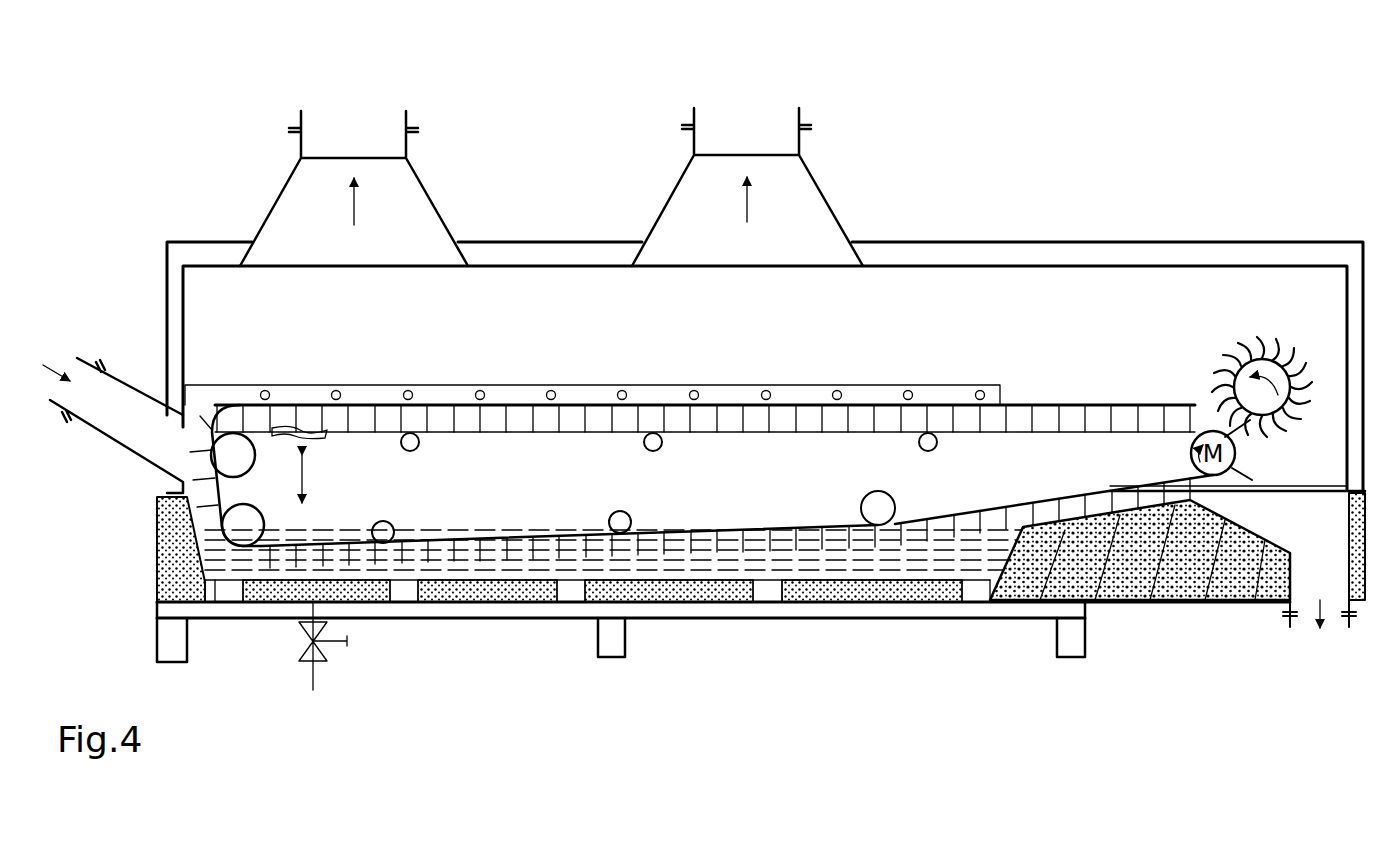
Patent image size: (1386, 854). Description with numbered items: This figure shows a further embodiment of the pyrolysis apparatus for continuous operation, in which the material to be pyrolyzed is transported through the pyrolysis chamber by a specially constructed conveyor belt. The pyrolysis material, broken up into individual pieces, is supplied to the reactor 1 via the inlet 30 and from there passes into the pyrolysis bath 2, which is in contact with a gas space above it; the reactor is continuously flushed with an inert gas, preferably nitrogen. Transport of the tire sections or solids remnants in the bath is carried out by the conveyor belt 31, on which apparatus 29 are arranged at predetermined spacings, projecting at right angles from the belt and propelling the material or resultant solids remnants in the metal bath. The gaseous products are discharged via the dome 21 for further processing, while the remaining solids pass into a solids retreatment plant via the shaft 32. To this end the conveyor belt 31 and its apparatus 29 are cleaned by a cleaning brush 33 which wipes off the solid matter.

The reactor 1 is at (405, 582).
The pyrolysis bath 2 is at (508, 583).
The dome 21 is at (745, 125).
The apparatus 29 is at (730, 540).
The inlet 30 is at (83, 372).
The conveyor belt 31 is at (747, 533).
The shaft 32 is at (1305, 602).
The cleaning brush 33 is at (1250, 358).